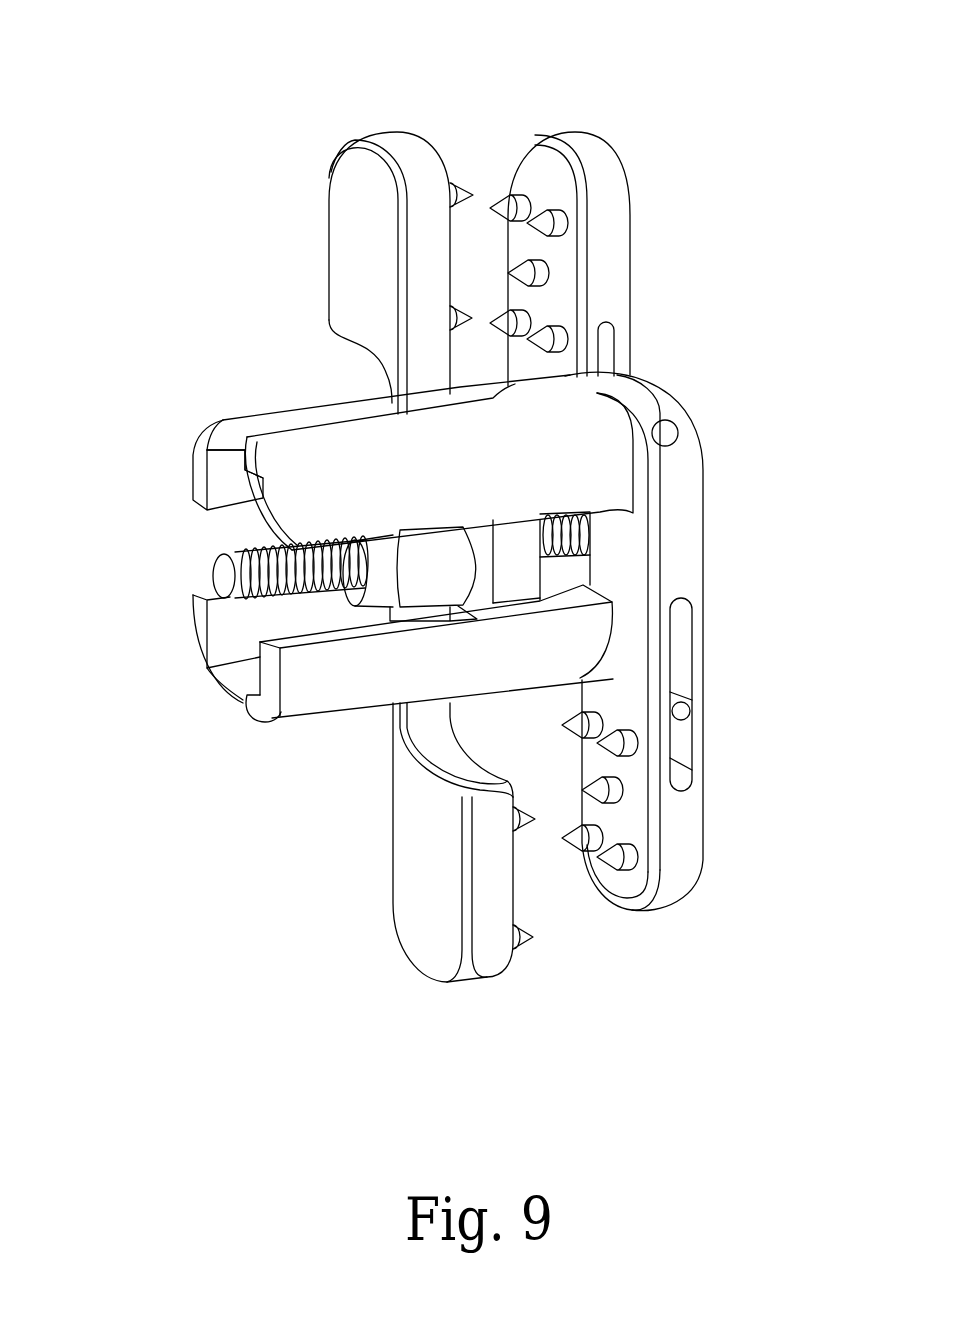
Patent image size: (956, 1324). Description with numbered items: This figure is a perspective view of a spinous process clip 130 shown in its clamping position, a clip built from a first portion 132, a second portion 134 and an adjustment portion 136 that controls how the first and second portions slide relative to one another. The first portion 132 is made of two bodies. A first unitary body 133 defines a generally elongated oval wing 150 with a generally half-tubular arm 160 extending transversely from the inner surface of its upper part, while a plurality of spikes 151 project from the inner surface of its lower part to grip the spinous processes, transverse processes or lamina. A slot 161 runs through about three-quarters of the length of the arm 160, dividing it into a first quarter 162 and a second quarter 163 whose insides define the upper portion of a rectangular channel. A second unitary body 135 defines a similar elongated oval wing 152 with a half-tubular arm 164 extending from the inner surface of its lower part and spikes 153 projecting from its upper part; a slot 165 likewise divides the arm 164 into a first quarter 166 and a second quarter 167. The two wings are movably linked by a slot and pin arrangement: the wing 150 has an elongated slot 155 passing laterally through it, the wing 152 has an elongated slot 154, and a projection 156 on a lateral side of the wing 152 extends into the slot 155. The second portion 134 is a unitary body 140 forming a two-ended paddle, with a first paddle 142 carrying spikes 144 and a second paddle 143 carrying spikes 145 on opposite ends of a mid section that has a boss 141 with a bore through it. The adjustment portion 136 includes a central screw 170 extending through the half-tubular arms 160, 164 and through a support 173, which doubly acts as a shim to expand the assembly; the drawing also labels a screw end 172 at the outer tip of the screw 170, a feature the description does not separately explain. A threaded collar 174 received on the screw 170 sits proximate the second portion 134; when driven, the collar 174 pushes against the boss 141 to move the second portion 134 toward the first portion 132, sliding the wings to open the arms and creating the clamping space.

The spinous process clip 130 is at (122, 98).
The first portion 132 is at (758, 352).
The first unitary body 133 is at (705, 453).
The second portion 134 is at (262, 262).
The second unitary body 135 is at (640, 210).
The adjustment portion 136 is at (240, 830).
The unitary body 140 is at (397, 764).
The boss 141 is at (461, 575).
The first paddle 142 is at (404, 897).
The second paddle 143 is at (342, 203).
The spikes 144 is at (538, 932).
The spikes 145 is at (463, 185).
The wing 150 is at (668, 890).
The spikes 151 is at (576, 842).
The wing 152 is at (605, 176).
The spikes 153 is at (500, 208).
The elongated slot 154 is at (612, 336).
The elongated slot 155 is at (682, 612).
The projection 156 is at (691, 708).
The half-tubular arm 160 is at (190, 420).
The slot 161 is at (218, 474).
The first quarter 162 is at (306, 410).
The second quarter 163 is at (500, 470).
The half-tubular arm 164 is at (262, 734).
The slot 165 is at (234, 689).
The first quarter 166 is at (304, 700).
The second quarter 167 is at (198, 616).
The central screw 170 is at (188, 543).
The screw head 172 is at (217, 578).
The support 173 is at (516, 594).
The threaded collar 174 is at (392, 553).